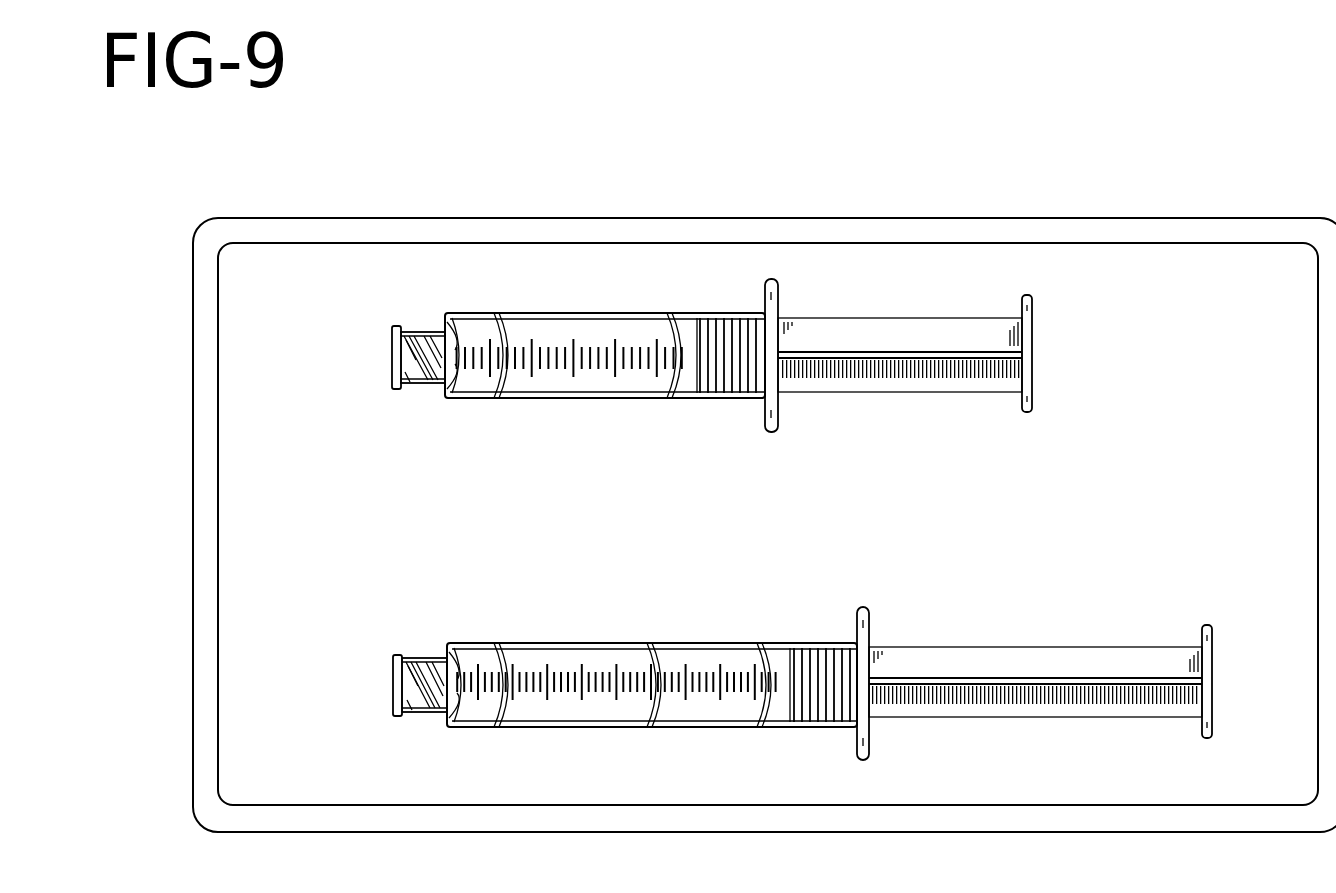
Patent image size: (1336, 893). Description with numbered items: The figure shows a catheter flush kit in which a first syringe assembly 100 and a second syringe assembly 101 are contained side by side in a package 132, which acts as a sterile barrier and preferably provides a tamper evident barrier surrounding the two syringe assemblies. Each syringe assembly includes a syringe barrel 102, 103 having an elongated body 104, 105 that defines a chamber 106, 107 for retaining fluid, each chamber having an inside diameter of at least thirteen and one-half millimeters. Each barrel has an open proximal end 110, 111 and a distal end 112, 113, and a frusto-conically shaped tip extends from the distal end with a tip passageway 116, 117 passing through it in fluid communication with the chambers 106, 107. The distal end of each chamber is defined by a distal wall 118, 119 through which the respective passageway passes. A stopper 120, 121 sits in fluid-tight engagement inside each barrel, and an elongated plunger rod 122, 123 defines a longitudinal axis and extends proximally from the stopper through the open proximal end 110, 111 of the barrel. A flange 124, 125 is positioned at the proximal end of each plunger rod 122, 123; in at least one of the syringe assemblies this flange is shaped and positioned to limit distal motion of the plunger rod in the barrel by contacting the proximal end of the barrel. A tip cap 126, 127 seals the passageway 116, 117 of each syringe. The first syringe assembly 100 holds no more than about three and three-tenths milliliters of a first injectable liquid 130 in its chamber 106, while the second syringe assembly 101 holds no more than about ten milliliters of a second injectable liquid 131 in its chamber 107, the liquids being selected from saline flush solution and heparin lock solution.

The first syringe assembly 100 is at (654, 306).
The second syringe assembly 101 is at (665, 740).
The syringe barrel 102 is at (606, 313).
The syringe barrel 103 is at (577, 643).
The elongated body 104 is at (617, 399).
The elongated body 105 is at (700, 728).
The chamber 106 is at (520, 380).
The chamber 107 is at (600, 710).
The open proximal end 110 is at (744, 313).
The open proximal end 111 is at (856, 608).
The distal end 112 is at (452, 404).
The distal end 113 is at (452, 729).
The tip passageway 116 is at (452, 343).
The tip passageway 117 is at (453, 672).
The distal wall 118 is at (450, 384).
The distal wall 119 is at (452, 712).
The stopper 120 is at (733, 382).
The stopper 121 is at (826, 700).
The elongated plunger rod 122 is at (917, 388).
The elongated plunger rod 123 is at (1042, 712).
The flange 124 is at (1032, 400).
The flange 125 is at (1212, 726).
The tip cap 126 is at (392, 354).
The tip cap 127 is at (393, 683).
The first injectable liquid 130 is at (517, 332).
The second injectable liquid 131 is at (487, 660).
The package 132 is at (1143, 232).